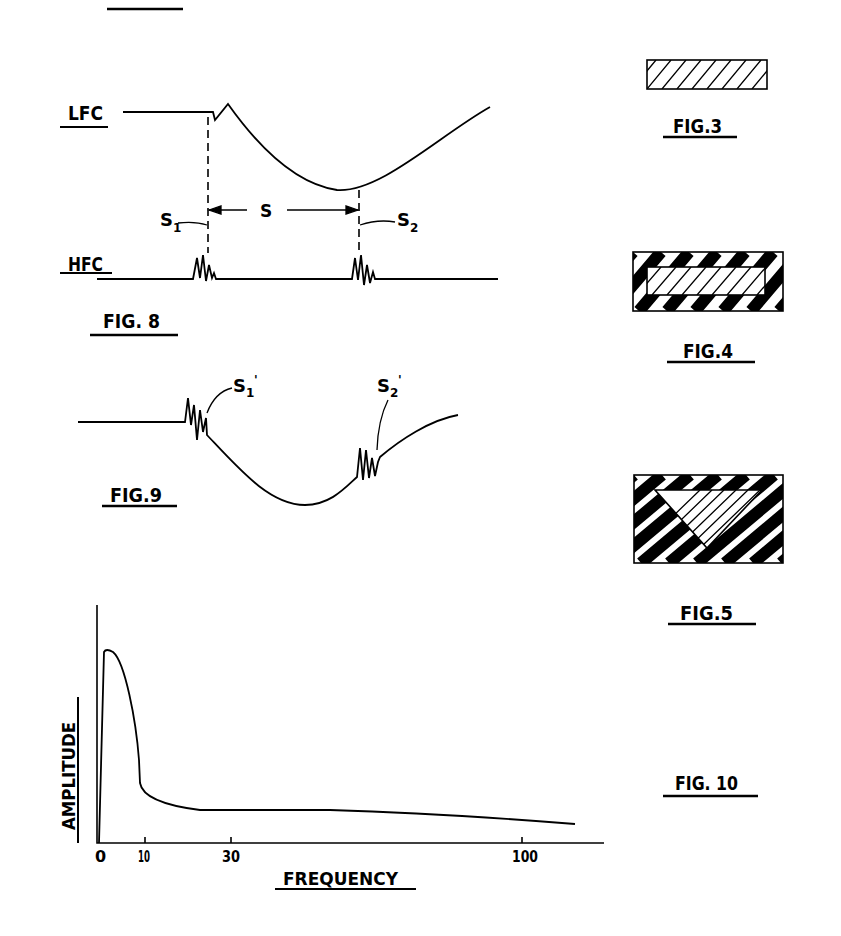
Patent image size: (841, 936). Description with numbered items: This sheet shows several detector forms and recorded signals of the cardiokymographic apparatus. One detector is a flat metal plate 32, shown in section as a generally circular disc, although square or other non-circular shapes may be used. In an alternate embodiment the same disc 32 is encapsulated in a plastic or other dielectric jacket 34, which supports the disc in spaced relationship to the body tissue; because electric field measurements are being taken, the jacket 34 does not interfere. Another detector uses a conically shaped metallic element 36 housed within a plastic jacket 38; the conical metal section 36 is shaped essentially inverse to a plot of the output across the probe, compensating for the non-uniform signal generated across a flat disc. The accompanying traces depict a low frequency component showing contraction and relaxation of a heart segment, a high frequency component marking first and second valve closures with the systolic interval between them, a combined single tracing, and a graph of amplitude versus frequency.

In FIG. 3, the plate 32 is at (705, 65).
In FIG. 4, the plate 32 is at (672, 275).
In FIG. 4, the dielectric jacket 34 is at (633, 280).
In FIG. 5, the conically shaped metallic element 36 is at (710, 503).
In FIG. 5, the plastic jacket 38 is at (634, 530).